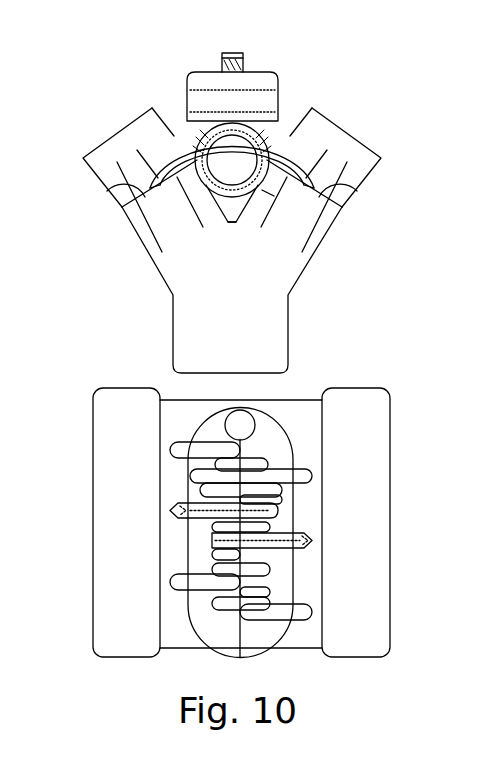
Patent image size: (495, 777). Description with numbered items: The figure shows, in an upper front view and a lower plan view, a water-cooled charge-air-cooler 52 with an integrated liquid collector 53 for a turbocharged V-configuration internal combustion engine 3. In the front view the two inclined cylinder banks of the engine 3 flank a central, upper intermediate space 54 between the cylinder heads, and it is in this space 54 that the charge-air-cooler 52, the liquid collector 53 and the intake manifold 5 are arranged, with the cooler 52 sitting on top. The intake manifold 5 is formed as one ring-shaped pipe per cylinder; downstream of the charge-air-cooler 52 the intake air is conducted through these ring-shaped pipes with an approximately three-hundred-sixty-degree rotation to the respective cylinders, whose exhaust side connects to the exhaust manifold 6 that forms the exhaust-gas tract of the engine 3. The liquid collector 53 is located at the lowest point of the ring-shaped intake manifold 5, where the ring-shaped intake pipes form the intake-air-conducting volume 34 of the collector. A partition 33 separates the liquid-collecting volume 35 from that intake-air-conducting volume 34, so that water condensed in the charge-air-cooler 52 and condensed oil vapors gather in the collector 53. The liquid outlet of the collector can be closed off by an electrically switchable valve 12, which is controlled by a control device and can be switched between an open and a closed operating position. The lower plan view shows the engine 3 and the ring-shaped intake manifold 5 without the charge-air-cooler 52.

The internal combustion engine 3 is at (240, 322).
The intake manifold 5 is at (177, 120).
The exhaust manifold 6 is at (105, 193).
The electrically switchable valve 12 is at (247, 182).
The partition 33 is at (200, 227).
The intake-air-conducting volume 34 is at (283, 180).
The liquid-collecting volume 35 is at (258, 185).
The charge-air-cooler 52 is at (187, 120).
The liquid collector 53 is at (228, 224).
The central upper intermediate space 54 is at (293, 86).